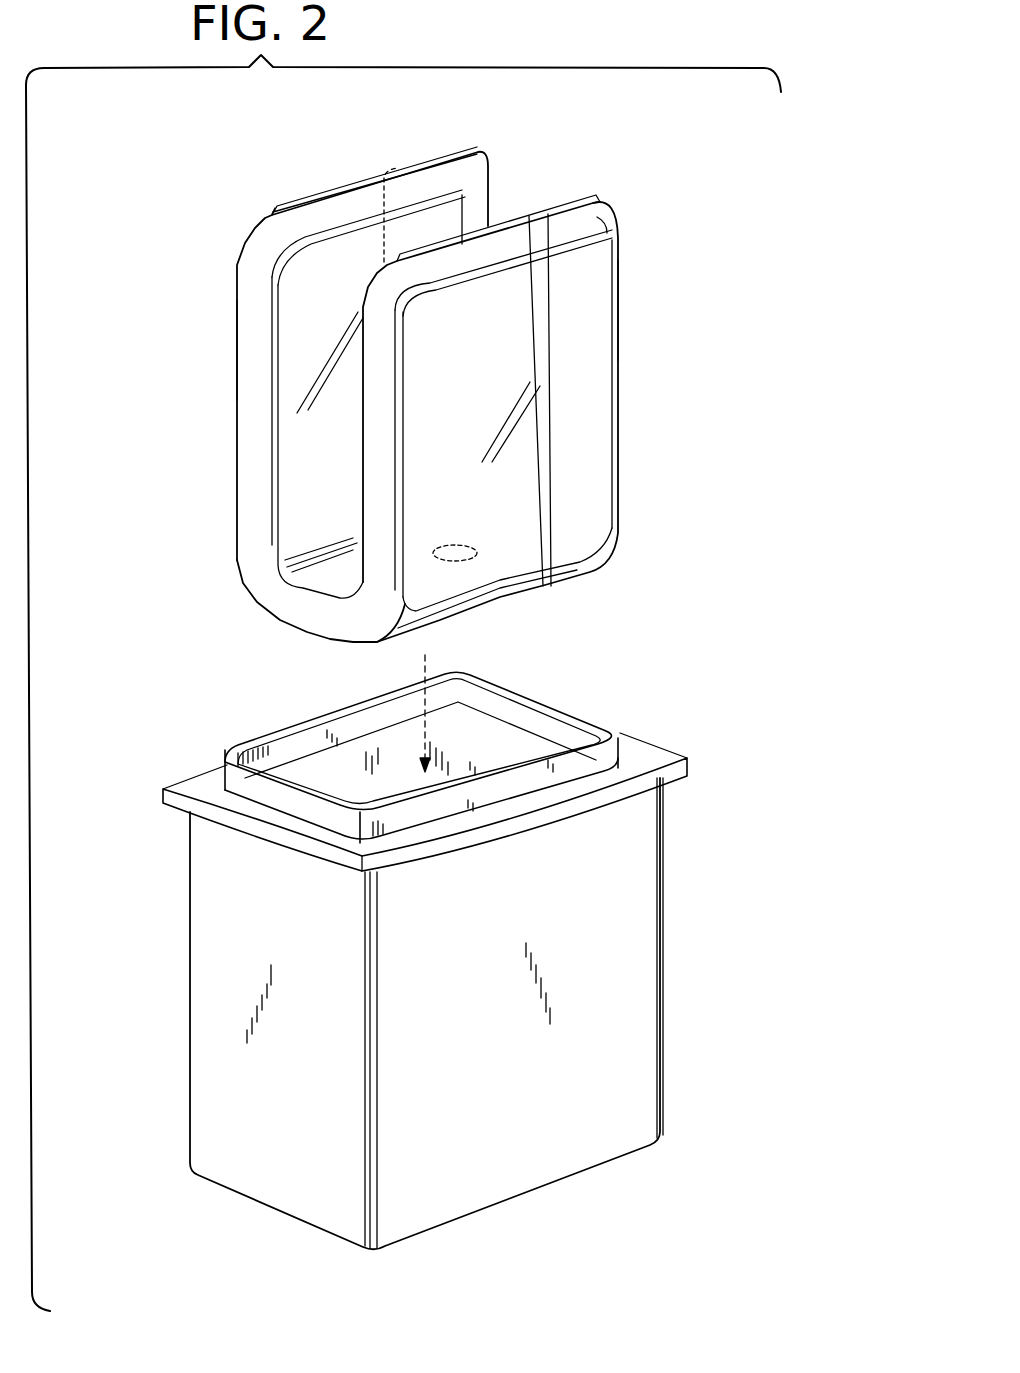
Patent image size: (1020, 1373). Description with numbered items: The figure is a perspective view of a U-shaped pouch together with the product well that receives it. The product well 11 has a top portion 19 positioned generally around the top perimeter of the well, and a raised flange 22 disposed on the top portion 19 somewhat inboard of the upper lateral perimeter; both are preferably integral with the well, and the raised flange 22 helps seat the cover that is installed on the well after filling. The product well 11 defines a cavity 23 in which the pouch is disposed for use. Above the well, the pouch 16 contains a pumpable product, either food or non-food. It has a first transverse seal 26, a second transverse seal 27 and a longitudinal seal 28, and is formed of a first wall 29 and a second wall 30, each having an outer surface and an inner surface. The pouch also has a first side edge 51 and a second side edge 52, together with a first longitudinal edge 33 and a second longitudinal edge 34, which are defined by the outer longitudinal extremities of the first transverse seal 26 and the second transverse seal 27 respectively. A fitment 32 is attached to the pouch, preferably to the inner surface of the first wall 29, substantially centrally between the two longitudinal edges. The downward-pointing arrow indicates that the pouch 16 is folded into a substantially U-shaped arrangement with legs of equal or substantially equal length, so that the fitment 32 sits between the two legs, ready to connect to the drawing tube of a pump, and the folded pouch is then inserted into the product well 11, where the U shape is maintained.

The product well 11 is at (663, 918).
The pouch 16 is at (222, 431).
The top portion 19 is at (647, 756).
The raised flange 22 is at (550, 707).
The cavity 23 is at (322, 777).
The first transverse seal 26 is at (302, 201).
The second transverse seal 27 is at (594, 201).
The longitudinal seal 28 is at (553, 398).
The first wall 29 is at (330, 311).
The second wall 30 is at (474, 388).
The fitment 32 is at (465, 546).
The first longitudinal edge 33 is at (363, 180).
The second longitudinal edge 34 is at (558, 208).
The first side edge 51 is at (237, 345).
The second side edge 52 is at (622, 303).